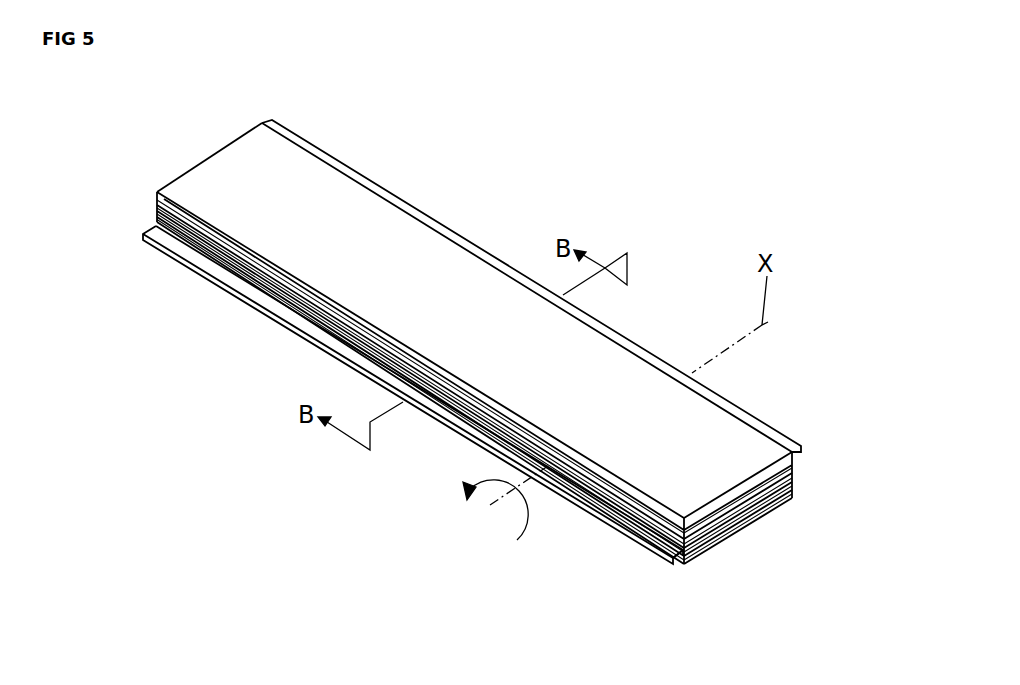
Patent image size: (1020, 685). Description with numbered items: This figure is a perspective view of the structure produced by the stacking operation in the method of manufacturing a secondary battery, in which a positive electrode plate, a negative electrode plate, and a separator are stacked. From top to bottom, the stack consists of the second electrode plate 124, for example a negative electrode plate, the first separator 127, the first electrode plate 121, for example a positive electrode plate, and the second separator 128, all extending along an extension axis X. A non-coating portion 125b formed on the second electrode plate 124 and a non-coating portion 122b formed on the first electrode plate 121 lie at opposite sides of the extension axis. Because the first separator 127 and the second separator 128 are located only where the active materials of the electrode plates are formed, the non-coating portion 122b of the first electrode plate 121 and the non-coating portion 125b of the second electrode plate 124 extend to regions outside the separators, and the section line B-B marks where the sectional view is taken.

The second electrode plate 124 is at (172, 188).
The first separator 127 is at (153, 217).
The second separator 128 is at (715, 548).
The non-coating portion 125b is at (393, 197).
The non-coating portion 122b is at (268, 307).
The first electrode plate 121 is at (675, 563).